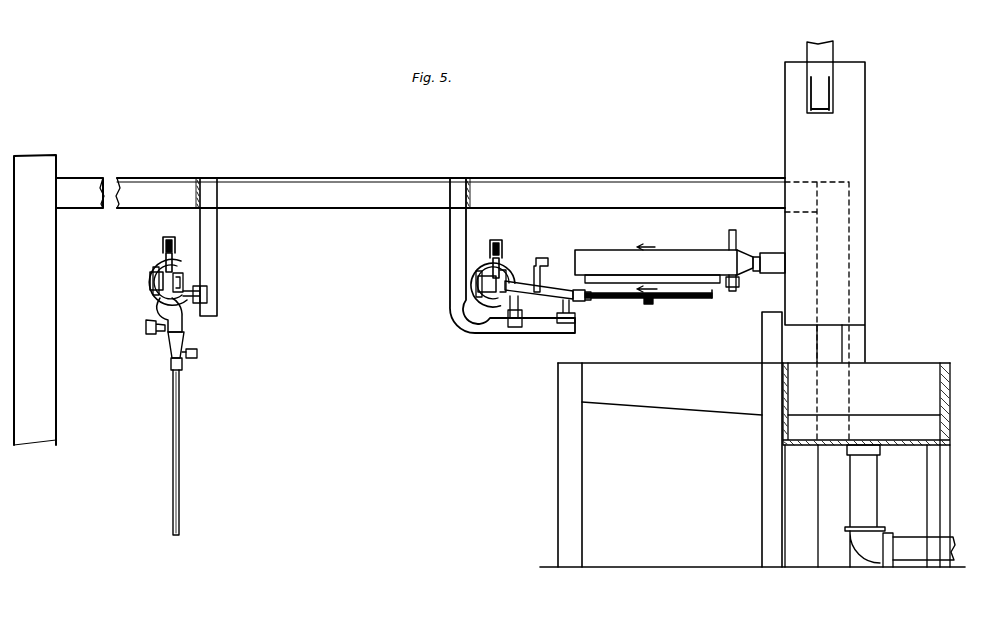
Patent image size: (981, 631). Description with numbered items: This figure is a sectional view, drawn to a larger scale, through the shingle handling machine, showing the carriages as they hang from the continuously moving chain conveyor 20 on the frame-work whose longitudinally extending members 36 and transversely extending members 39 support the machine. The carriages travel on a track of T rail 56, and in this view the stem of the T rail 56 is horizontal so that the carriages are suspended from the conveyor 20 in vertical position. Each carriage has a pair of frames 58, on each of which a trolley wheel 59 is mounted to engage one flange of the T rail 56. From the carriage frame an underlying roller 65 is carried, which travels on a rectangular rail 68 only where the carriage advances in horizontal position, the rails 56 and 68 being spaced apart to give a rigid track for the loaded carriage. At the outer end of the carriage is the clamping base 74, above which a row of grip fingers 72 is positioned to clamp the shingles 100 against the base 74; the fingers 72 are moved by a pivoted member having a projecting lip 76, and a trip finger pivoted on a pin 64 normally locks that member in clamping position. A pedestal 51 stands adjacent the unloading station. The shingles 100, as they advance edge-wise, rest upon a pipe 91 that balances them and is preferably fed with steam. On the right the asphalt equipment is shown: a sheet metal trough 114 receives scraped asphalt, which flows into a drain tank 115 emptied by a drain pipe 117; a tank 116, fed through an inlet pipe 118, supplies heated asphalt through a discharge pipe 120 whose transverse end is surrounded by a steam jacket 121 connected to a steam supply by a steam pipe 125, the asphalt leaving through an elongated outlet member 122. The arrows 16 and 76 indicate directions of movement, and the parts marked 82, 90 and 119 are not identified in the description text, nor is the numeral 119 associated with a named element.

The arrow indicating direction of movement 16 is at (647, 240).
The chain conveyor 20 is at (165, 247).
The longitudinally extending member 36 is at (205, 175).
The transversely extending member 39 is at (644, 178).
The pedestal 51 is at (449, 229).
The T rail 56 is at (149, 287).
The frame 58 is at (154, 263).
The trolley wheel 59 is at (178, 265).
The pin 64 is at (183, 324).
The underlying roller 65 is at (197, 354).
The rectangular rail 68 is at (576, 318).
The grip finger 72 is at (170, 367).
The clamping base 74 is at (182, 366).
The projecting lip 76 is at (657, 289).
The handle knob 82 is at (145, 326).
The hook bracket 90 is at (333, 251).
The pipe 91 is at (647, 303).
The shingle 100 is at (180, 398).
The sheet metal trough 114 is at (695, 370).
The drain tank 115 is at (915, 443).
The tank 116 is at (861, 110).
The drain pipe 117 is at (866, 504).
The inlet pipe 118 is at (832, 50).
The cylinder 119 is at (667, 255).
The discharge pipe 120 is at (770, 247).
The steam jacket 121 is at (604, 257).
The elongated outlet member 122 is at (714, 290).
The steam pipe 125 is at (729, 236).